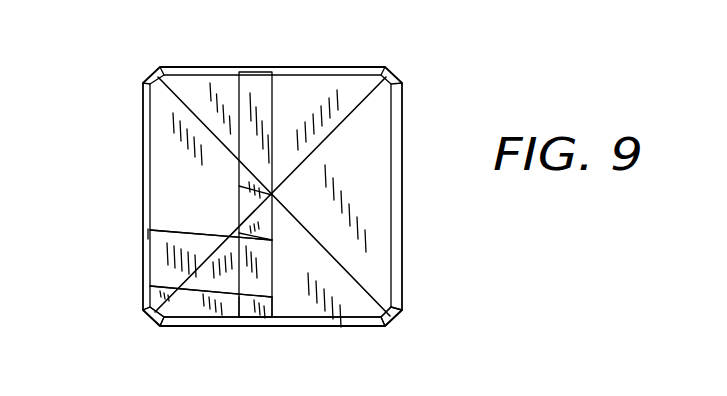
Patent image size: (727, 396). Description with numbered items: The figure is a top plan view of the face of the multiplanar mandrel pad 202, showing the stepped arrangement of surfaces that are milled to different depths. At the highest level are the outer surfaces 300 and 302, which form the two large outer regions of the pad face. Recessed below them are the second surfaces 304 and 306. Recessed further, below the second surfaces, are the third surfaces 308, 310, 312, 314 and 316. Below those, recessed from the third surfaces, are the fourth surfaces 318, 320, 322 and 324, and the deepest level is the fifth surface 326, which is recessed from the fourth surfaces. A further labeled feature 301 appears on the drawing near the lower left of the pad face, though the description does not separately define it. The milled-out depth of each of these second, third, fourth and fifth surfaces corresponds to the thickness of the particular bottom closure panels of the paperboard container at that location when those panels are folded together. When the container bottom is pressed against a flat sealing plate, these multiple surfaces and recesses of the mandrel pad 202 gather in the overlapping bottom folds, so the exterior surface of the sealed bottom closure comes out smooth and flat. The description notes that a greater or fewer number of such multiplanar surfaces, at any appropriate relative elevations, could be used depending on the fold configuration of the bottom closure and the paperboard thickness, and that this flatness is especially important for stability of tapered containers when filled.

The mandrel pad 202 is at (143, 103).
The outer surface 300 is at (162, 151).
The lower edge portion 301 is at (163, 296).
The outer surface 302 is at (365, 212).
The second surface 304 is at (160, 238).
The second surface 306 is at (245, 190).
The third surface 308 is at (236, 233).
The third surface 310 is at (201, 311).
The third surface 312 is at (370, 311).
The third surface 314 is at (296, 78).
The third surface 316 is at (180, 76).
The fourth surface 318 is at (250, 78).
The fourth surface 320 is at (193, 291).
The fourth surface 322 is at (258, 231).
The fourth surface 324 is at (247, 320).
The fifth surface 326 is at (270, 283).